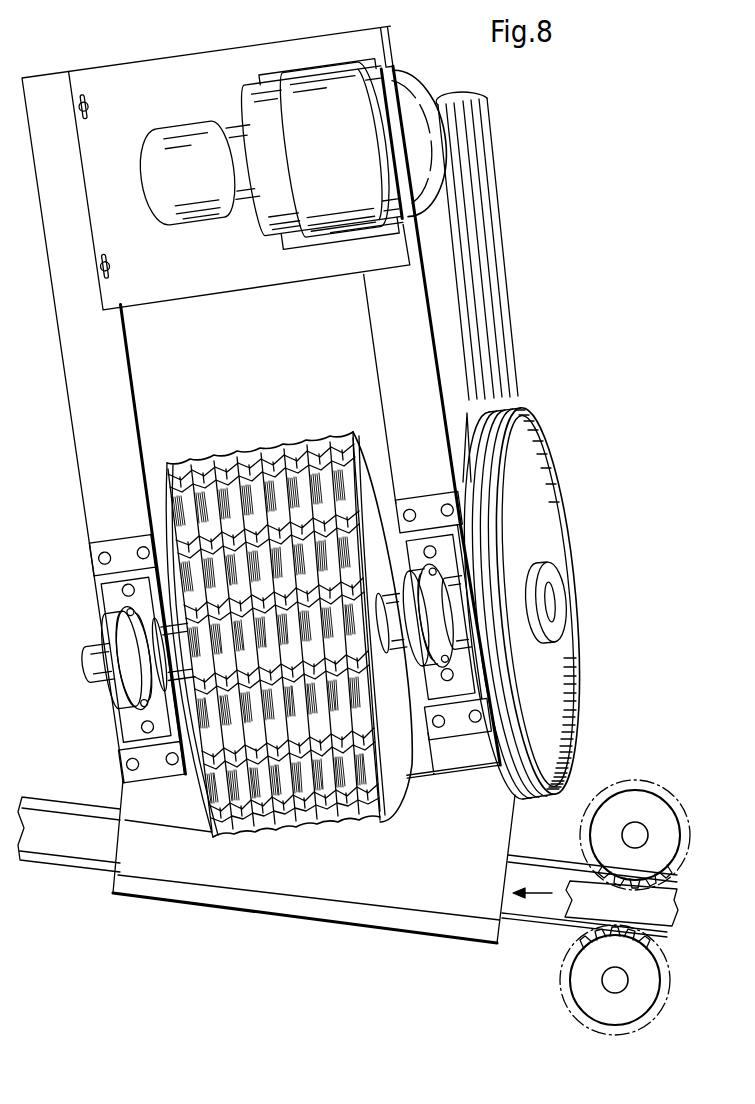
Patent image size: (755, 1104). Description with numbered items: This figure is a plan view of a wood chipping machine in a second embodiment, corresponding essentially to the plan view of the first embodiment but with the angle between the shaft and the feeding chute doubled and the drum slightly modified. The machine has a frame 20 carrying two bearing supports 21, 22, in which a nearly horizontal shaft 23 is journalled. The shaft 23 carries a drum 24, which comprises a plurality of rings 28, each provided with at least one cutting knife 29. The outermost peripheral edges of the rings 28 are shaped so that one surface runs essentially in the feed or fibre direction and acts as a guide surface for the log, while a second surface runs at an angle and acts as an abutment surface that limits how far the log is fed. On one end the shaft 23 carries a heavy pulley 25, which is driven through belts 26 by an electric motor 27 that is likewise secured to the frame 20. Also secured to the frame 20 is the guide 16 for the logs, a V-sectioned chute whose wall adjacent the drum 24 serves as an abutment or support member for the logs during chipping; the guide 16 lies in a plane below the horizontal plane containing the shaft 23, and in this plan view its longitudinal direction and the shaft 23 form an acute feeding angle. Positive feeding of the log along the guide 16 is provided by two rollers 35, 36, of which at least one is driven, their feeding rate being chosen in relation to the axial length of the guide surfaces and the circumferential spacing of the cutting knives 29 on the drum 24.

The guide 16 is at (380, 900).
The frame 20 is at (125, 411).
The bearing support 21 is at (97, 578).
The bearing support 22 is at (433, 511).
The shaft 23 is at (88, 663).
The drum 24 is at (229, 446).
The pulley 25 is at (538, 478).
The belts 26 is at (503, 296).
The electric motor 27 is at (418, 88).
The rings 28 is at (217, 835).
The cutting knife 29 is at (313, 434).
The roller 35 is at (580, 999).
The roller 36 is at (657, 802).